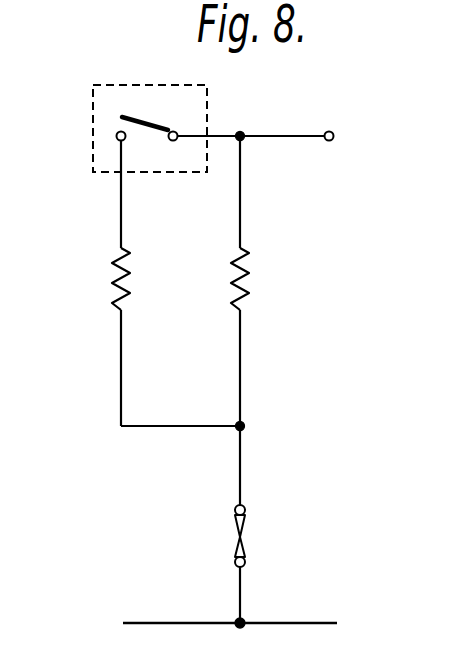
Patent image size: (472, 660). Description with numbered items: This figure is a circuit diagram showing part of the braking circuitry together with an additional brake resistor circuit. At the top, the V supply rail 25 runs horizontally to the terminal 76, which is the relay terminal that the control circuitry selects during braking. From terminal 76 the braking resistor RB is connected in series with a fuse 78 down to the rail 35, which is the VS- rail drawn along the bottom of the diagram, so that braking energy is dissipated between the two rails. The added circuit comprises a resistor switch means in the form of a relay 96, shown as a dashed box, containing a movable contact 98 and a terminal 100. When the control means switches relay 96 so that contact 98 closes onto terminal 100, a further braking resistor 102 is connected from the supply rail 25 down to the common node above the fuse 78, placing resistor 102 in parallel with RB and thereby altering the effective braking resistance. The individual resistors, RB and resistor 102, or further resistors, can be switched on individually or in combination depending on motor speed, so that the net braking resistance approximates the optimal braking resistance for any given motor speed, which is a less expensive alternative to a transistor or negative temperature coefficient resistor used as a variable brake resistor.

The relay 96 is at (122, 84).
The contact 98 is at (143, 123).
The terminal 100 is at (116, 136).
The terminal 76 is at (328, 130).
The V supply rail 25 is at (280, 138).
The further braking resistor 102 is at (112, 273).
The braking resistor RB is at (257, 279).
The fuse 78 is at (246, 520).
The rail 35 is at (284, 622).